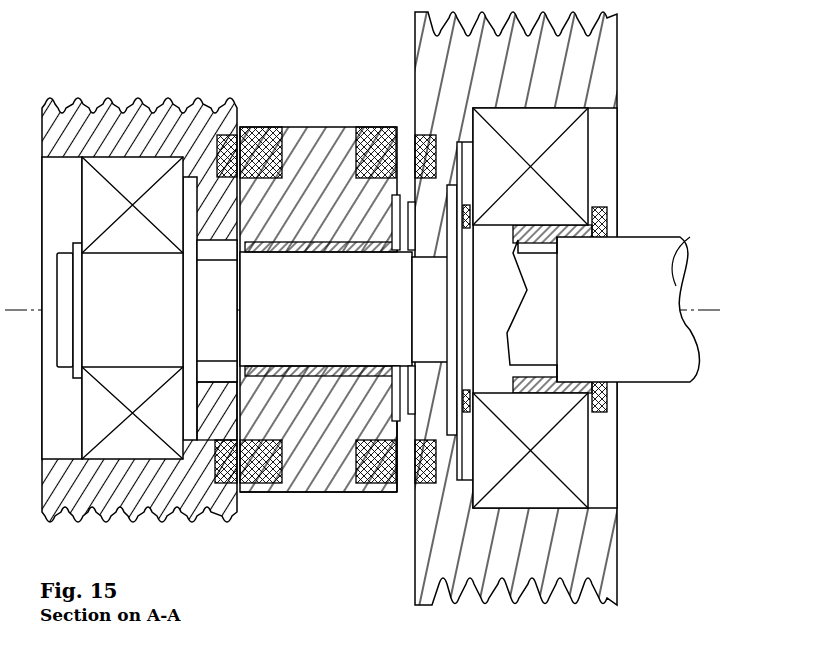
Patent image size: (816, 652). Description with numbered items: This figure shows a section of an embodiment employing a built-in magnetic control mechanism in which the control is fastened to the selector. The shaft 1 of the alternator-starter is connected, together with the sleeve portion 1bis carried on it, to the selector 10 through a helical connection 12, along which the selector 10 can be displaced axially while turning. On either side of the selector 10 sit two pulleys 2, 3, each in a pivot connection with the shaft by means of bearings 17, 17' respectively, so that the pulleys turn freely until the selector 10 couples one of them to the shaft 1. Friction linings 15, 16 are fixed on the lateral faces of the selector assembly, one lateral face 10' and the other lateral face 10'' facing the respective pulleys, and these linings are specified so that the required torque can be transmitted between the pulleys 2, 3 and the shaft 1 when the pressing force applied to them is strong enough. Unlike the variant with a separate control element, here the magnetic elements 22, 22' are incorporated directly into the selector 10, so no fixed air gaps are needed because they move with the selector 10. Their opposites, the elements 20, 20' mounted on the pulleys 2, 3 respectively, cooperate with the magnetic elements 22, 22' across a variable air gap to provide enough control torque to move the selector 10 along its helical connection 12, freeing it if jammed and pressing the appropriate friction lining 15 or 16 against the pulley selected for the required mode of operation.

The shaft 1 is at (603, 326).
The sleeve on shaft 1bis is at (550, 312).
The pulley 2 is at (139, 295).
The pulley 3 is at (543, 308).
The selector 10 is at (326, 300).
The lateral face of the selector 10' is at (320, 309).
The lateral face of the selector 10'' is at (397, 308).
The helical connection 12 is at (309, 530).
The friction lining 15 is at (182, 476).
The friction lining 16 is at (366, 475).
The bearing 17 is at (108, 263).
The bearing 17' is at (579, 308).
The element on the pulley 20 is at (180, 275).
The element on the pulley 20' is at (380, 256).
The magnetic element 22 is at (269, 276).
The magnetic element 22' is at (360, 276).